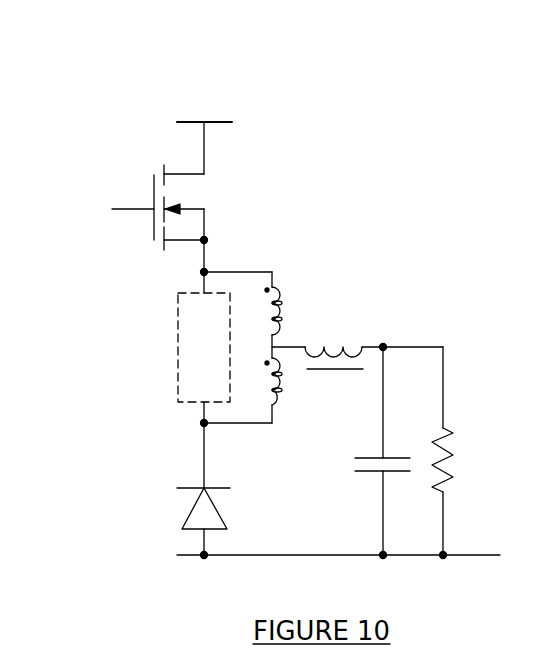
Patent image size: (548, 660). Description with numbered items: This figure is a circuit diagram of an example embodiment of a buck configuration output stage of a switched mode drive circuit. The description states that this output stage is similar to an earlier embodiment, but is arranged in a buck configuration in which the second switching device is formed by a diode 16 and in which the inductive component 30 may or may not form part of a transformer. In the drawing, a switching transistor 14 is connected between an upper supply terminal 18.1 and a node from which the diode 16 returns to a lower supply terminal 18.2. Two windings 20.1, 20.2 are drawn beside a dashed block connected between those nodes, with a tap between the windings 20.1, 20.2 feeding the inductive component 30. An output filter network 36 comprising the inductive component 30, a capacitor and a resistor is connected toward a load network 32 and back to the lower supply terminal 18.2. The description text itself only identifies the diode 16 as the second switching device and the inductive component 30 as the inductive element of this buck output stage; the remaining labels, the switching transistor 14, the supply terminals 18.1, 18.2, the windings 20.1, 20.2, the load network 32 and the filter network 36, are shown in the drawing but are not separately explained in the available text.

The switching transistor (MOSFET) 14 is at (118, 168).
The diode 16 is at (145, 495).
The first supply terminal 18.1 is at (207, 122).
The second supply terminal (ground) 18.2 is at (278, 555).
The first winding of transformer 20.1 is at (285, 297).
The second winding of transformer 20.2 is at (282, 390).
The inductive component 30 is at (333, 312).
The load network 32 is at (433, 283).
The output filter 36 is at (357, 410).